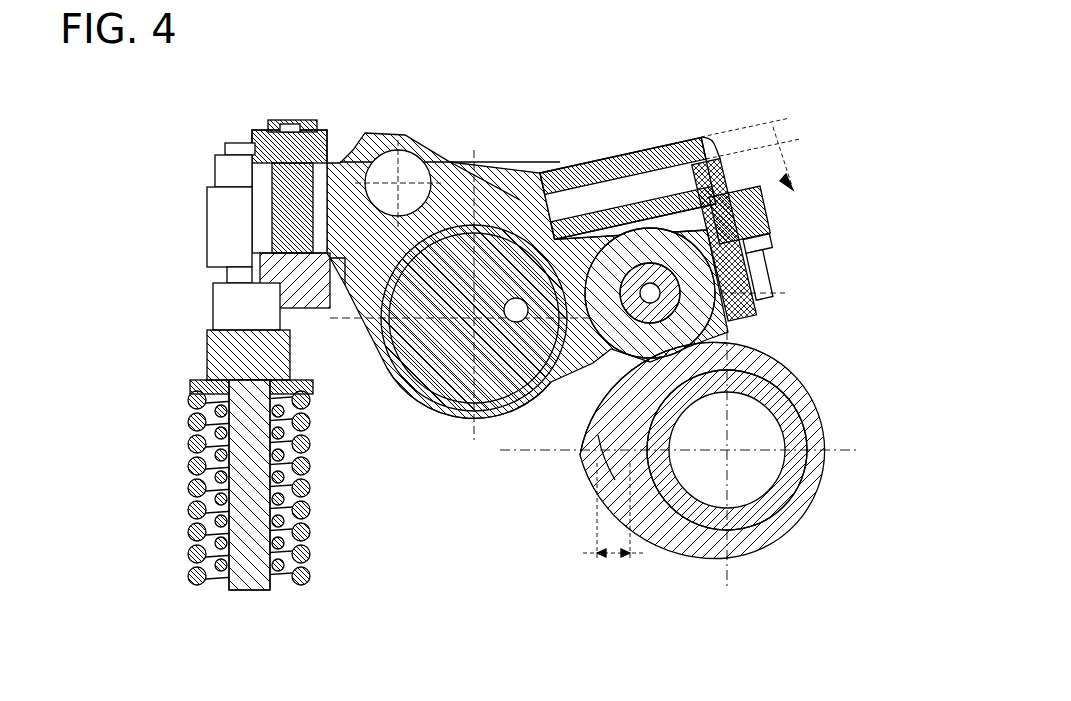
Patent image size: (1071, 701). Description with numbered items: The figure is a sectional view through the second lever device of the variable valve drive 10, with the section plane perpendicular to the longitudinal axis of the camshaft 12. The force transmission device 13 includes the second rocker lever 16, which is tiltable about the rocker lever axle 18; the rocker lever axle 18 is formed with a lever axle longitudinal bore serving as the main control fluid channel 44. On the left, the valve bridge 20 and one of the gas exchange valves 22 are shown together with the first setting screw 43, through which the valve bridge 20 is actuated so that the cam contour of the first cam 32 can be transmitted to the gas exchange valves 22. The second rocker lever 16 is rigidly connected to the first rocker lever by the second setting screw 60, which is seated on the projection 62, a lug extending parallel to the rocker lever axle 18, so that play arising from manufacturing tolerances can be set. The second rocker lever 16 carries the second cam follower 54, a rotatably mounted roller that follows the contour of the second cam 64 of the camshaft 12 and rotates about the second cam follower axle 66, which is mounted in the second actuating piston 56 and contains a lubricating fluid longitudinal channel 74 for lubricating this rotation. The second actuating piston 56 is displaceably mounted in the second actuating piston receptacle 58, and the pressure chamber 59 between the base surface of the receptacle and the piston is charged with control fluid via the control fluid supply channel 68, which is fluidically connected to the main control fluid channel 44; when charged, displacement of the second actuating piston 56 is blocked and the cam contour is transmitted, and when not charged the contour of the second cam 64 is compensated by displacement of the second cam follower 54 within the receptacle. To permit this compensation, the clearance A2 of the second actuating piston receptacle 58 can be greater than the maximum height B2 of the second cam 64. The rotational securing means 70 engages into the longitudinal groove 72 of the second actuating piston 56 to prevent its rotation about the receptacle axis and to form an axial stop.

The variable valve drive 10 is at (843, 84).
The camshaft 12 is at (836, 428).
The force transmission device 13 is at (410, 120).
The second rocker lever 16 is at (563, 183).
The rocker lever axle 18 is at (426, 335).
The valve bridge 20 is at (200, 337).
The gas exchange valves 22 is at (203, 490).
The first cam 32 is at (588, 432).
The first setting screw 43 is at (213, 185).
The main control fluid channel 44 is at (497, 220).
The second cam follower 54 is at (714, 330).
The second actuating piston 56 is at (768, 282).
The second actuating piston receptacle 58 is at (705, 137).
The pressure chamber 59 is at (628, 212).
The second setting screw 60 is at (255, 140).
The projection 62 is at (300, 308).
The second cam 64 is at (583, 470).
The second cam follower axle 66 is at (632, 318).
The control fluid supply channel 68 is at (517, 298).
The rotational securing means 70 is at (770, 218).
The longitudinal groove 72 is at (766, 252).
The lubricating fluid longitudinal channel 74 is at (768, 300).
The clearance A2 is at (766, 154).
The maximum height B2 is at (614, 532).